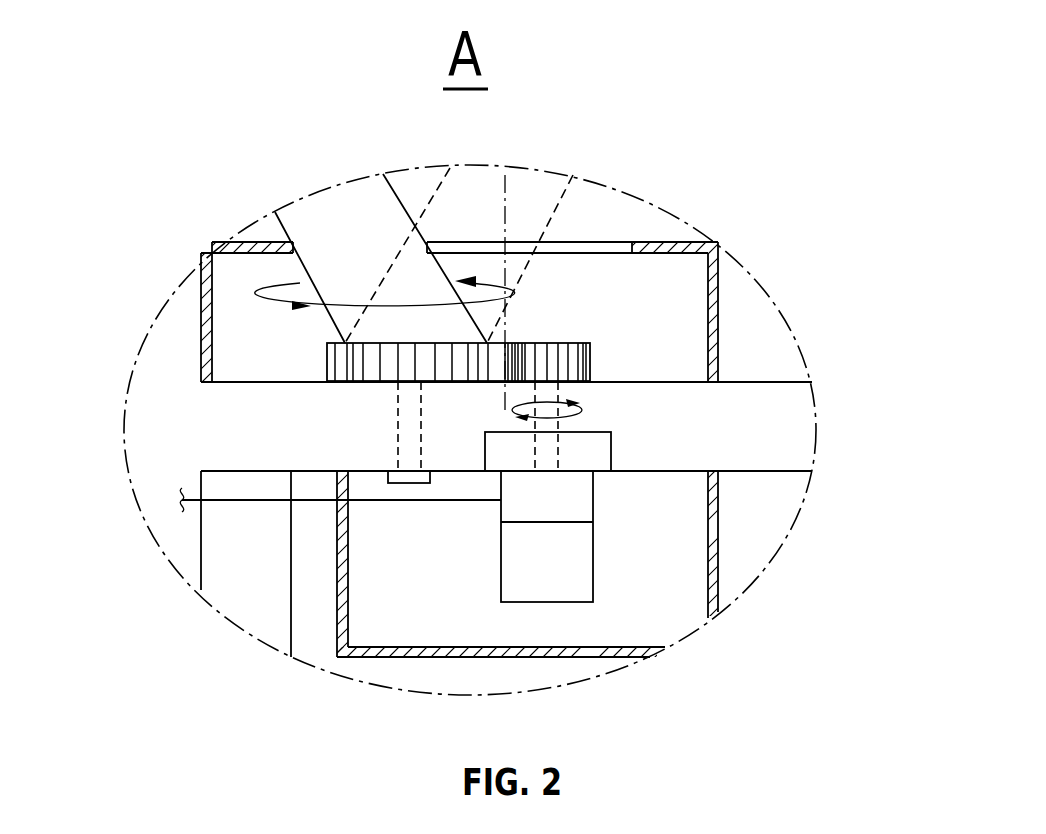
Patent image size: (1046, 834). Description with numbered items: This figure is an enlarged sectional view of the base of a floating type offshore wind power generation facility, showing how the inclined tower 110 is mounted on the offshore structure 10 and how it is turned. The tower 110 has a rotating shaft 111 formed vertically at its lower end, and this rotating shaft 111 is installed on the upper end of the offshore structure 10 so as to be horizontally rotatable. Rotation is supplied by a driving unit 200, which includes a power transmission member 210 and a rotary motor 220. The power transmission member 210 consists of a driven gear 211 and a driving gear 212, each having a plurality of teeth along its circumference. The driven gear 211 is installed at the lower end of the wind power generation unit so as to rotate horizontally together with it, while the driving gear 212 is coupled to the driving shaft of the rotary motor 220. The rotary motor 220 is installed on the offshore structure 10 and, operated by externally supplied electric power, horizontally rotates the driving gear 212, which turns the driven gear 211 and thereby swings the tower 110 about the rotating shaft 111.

The offshore structure 10 is at (205, 411).
The tower 110 is at (333, 227).
The rotating shaft 111 is at (413, 430).
The driving unit 200 is at (633, 377).
The power transmission member 210 is at (578, 312).
The driven gear 211 is at (460, 353).
The driving gear 212 is at (573, 363).
The rotary motor 220 is at (552, 552).